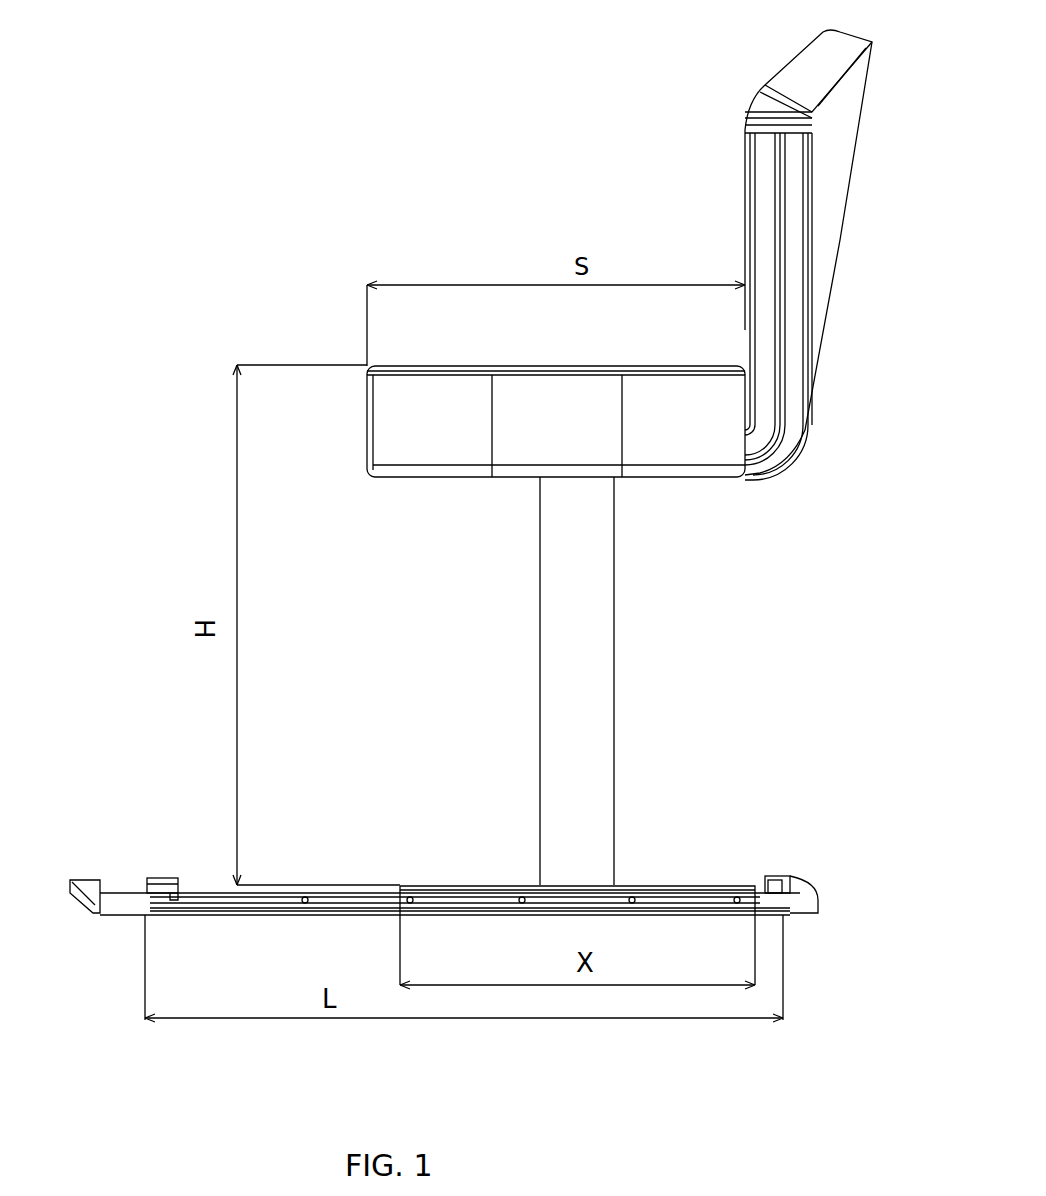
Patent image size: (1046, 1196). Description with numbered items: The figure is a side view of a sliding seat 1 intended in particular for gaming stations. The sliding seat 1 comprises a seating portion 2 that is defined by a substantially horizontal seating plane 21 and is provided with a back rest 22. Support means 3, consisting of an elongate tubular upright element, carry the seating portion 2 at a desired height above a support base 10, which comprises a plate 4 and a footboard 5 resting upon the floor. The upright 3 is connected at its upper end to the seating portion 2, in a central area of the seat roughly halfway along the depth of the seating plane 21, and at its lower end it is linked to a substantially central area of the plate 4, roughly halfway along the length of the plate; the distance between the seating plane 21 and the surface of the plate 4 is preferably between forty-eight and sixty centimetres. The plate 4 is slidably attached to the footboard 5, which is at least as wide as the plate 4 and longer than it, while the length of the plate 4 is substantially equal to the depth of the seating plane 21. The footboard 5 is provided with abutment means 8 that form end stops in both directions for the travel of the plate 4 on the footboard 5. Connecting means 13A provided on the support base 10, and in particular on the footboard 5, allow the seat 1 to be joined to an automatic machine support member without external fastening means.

The sliding seat 1 is at (152, 260).
The seating portion 2 is at (786, 309).
The back rest 22 is at (787, 88).
The seating plane 21 is at (447, 365).
The support means 3 is at (603, 637).
The support base 10 is at (442, 826).
The connecting means 13A is at (75, 880).
The footboard 5 is at (205, 902).
The plate 4 is at (672, 893).
The abutment means 8 is at (155, 878).